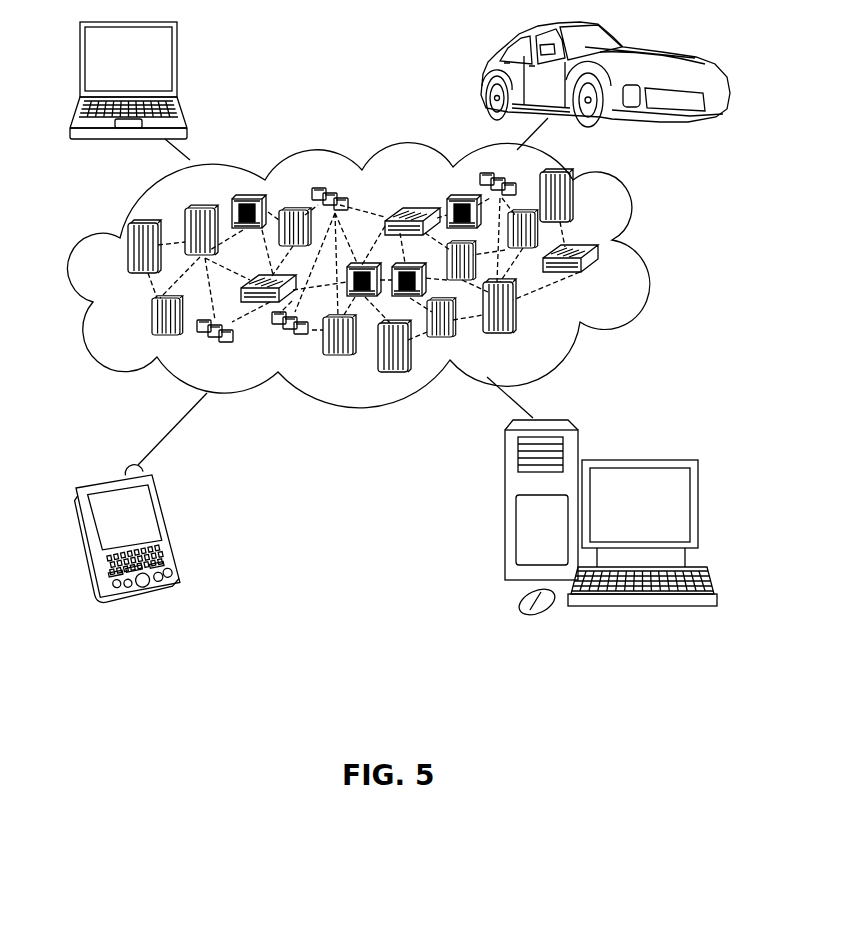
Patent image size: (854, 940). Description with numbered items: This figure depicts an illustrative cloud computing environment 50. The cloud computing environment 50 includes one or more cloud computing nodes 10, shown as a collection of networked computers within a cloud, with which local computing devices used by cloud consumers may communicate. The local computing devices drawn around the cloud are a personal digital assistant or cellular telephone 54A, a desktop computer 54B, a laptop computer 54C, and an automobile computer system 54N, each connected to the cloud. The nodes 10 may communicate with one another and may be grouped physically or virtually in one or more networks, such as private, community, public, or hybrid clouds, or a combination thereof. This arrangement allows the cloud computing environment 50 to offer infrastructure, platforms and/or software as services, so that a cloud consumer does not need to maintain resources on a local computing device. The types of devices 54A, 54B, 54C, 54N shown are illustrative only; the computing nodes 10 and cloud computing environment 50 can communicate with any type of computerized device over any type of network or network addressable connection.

The cloud computing environment 50 is at (377, 275).
The cloud computing nodes 10 is at (606, 285).
The personal digital assistant (PDA) or cellular telephone 54A is at (170, 525).
The desktop computer 54B is at (642, 458).
The laptop computer 54C is at (178, 62).
The automobile computer system 54N is at (485, 70).